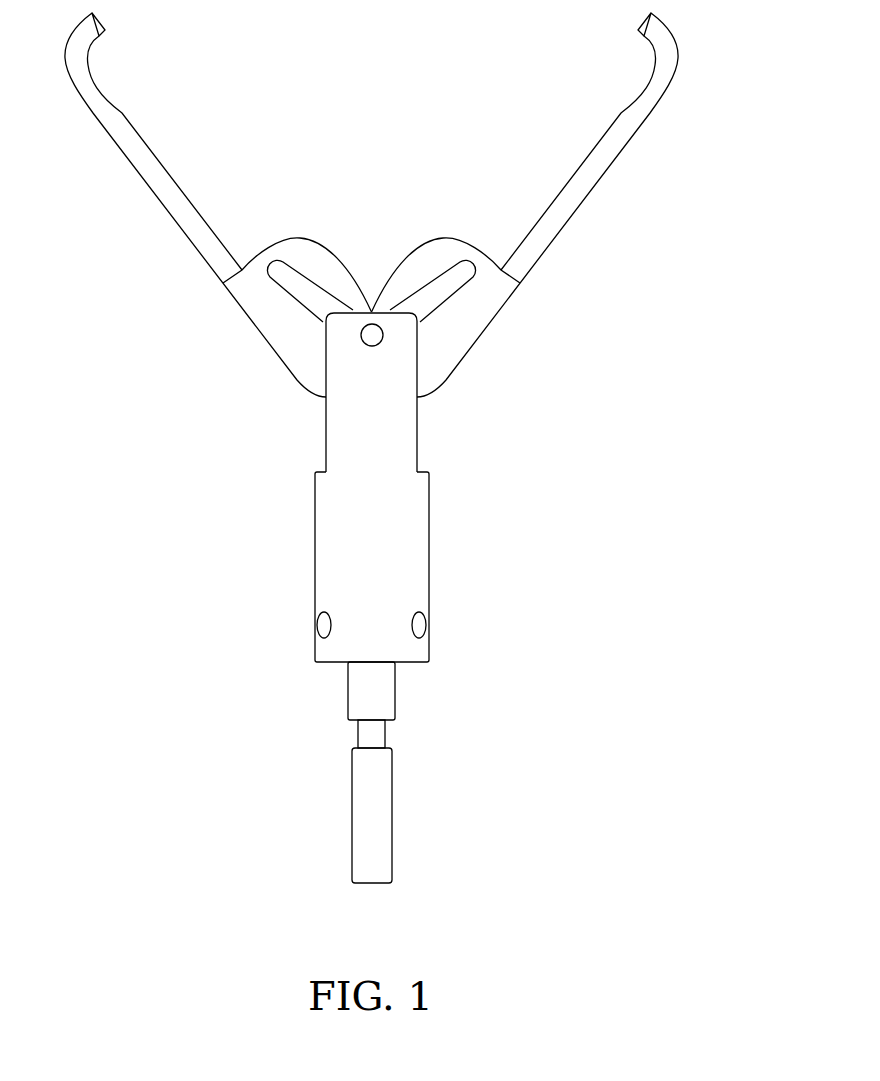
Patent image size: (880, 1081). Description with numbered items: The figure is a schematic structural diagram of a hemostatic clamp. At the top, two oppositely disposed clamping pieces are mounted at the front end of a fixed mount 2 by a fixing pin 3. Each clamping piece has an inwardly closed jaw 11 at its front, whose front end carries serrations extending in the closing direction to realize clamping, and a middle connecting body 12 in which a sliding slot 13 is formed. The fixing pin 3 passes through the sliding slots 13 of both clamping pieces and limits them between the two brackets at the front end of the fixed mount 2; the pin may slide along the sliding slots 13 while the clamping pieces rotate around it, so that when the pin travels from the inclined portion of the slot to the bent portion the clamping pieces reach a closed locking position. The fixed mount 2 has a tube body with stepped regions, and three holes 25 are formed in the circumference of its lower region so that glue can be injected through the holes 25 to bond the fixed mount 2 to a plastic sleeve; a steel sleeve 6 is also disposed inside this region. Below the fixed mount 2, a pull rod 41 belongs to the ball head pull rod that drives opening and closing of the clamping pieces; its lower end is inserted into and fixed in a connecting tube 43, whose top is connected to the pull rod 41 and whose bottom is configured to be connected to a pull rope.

The jaw 11 is at (590, 170).
The middle connecting body 12 is at (495, 285).
The sliding slot 13 is at (427, 297).
The fixed mount 2 is at (382, 552).
The fixing pin 3 is at (372, 335).
The holes 25 is at (418, 627).
The steel sleeve 6 is at (375, 687).
The pull rod 41 is at (367, 733).
The connecting tube 43 is at (375, 772).